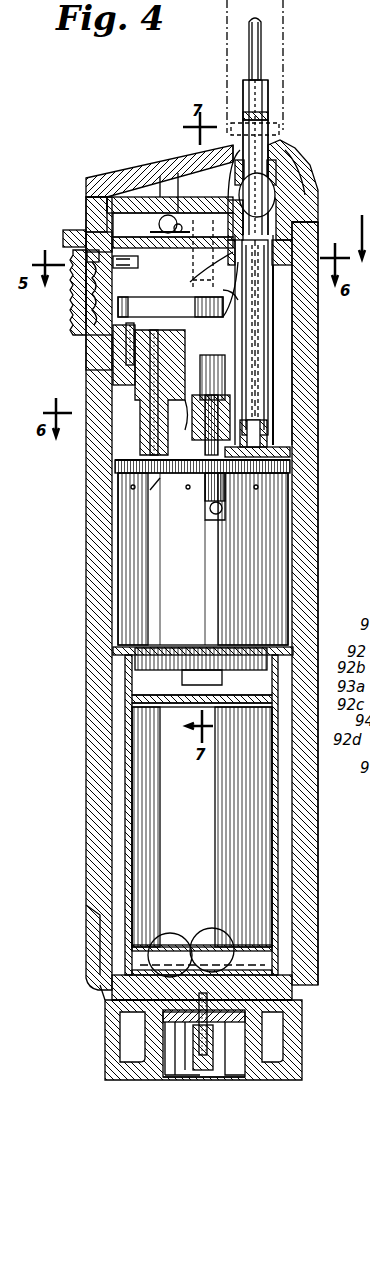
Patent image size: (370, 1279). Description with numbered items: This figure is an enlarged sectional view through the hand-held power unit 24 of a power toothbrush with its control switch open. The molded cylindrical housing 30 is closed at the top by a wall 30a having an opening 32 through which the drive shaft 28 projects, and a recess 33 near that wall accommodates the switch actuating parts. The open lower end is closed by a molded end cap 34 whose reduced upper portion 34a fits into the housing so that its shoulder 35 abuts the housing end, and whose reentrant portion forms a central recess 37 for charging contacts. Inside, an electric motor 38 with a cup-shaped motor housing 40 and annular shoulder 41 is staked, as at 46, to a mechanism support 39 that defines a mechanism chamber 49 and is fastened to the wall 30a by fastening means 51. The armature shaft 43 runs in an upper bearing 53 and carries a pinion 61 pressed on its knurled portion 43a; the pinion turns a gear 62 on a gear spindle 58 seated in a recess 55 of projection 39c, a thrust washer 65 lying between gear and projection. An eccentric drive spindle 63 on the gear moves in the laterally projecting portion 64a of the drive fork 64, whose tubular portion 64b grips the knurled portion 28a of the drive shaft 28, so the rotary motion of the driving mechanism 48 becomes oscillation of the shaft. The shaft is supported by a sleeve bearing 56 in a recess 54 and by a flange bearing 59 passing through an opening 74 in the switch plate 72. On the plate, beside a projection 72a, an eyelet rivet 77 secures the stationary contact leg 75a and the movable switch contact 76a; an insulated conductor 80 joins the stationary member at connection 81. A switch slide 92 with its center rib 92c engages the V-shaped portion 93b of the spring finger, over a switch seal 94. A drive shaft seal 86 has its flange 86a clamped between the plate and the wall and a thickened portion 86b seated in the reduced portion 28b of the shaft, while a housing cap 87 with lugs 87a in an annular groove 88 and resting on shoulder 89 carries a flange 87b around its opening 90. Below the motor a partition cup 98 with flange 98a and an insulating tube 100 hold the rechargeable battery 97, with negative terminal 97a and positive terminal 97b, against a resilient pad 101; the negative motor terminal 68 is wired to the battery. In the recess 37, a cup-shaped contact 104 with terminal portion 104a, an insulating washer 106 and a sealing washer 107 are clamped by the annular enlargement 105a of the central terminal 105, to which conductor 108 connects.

The power unit 24 is at (318, 583).
The drive shaft 28 is at (283, 178).
The knurled portion 28a is at (260, 318).
The portion of reduced cross section 28b is at (270, 150).
The housing 30 is at (320, 528).
The wall 30a is at (145, 176).
The opening 32 is at (296, 188).
The recess 33 is at (72, 240).
The end cap 34 is at (304, 1024).
The upper portion 34a is at (100, 935).
The shoulder 35 is at (98, 990).
The central recess 37 is at (165, 1080).
The electric motor 38 is at (296, 568).
The mechanism support 39 is at (294, 378).
The projection 39c is at (185, 420).
The motor housing 40 is at (140, 603).
The annular shoulder 41 is at (186, 655).
The armature shaft 43 is at (228, 487).
The knurled portion 43a is at (165, 483).
The staking 46 is at (130, 487).
The driving mechanism 48 is at (135, 410).
The mechanism chamber 49 is at (275, 340).
The fastening means 51 is at (215, 322).
The upper bearing 53 is at (200, 495).
The recess 54 is at (285, 455).
The recess 55 is at (205, 440).
The sleeve bearing 56 is at (270, 432).
The gear spindle 58 is at (202, 484).
The flange bearing 59 is at (195, 272).
The pinion 61 is at (212, 385).
The gear 62 is at (118, 355).
The drive spindle 63 is at (125, 352).
The drive fork 64 is at (170, 308).
The laterally projecting portion 64a is at (100, 338).
The tubular portion 64b is at (275, 358).
The thrust washer 65 is at (150, 430).
The negative motor terminal 68 is at (210, 512).
The switch plate 72 is at (170, 195).
The projection 72a is at (118, 195).
The opening 74 is at (255, 337).
The leg 75a is at (140, 262).
The movable switch contact 76a is at (140, 262).
The eyelet rivet 77 is at (173, 225).
The insulated conductor 80 is at (160, 176).
The connection 81 is at (178, 173).
The drive shaft seal 86 is at (306, 162).
The annular flange 86a is at (319, 226).
The thickened annular portion 86b is at (272, 157).
The housing cap 87 is at (100, 176).
The lugs 87a is at (86, 198).
The annular projecting flange 87b is at (232, 135).
The annular groove 88 is at (300, 205).
The annular shoulder 89 is at (100, 215).
The opening 90 is at (265, 124).
The switch slide 92 is at (64, 326).
The rib 92c is at (86, 300).
The V-shaped intermediate portion 93b is at (92, 270).
The switch seal 94 is at (86, 256).
The rechargeable battery 97 is at (150, 825).
The negative terminal 97a is at (130, 1003).
The positive terminal 97b is at (105, 1023).
The partition cup 98 is at (125, 690).
The flange 98a is at (113, 652).
The insulating tube 100 is at (128, 800).
The resilient pad 101 is at (300, 985).
The cup-shaped contact 104 is at (238, 1070).
The terminal portion 104a is at (202, 952).
The central terminal 105 is at (212, 1060).
The annular enlargement 105a is at (186, 1075).
The insulating washer 106 is at (170, 1078).
The resilient sealing washer 107 is at (222, 948).
The conductor 108 is at (208, 945).